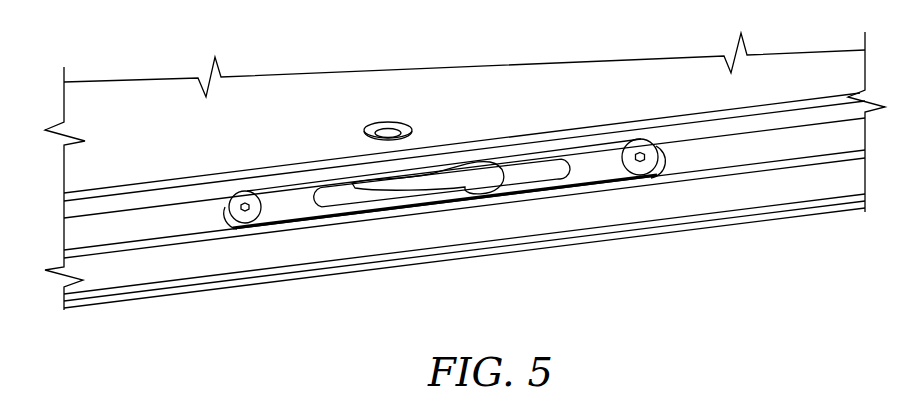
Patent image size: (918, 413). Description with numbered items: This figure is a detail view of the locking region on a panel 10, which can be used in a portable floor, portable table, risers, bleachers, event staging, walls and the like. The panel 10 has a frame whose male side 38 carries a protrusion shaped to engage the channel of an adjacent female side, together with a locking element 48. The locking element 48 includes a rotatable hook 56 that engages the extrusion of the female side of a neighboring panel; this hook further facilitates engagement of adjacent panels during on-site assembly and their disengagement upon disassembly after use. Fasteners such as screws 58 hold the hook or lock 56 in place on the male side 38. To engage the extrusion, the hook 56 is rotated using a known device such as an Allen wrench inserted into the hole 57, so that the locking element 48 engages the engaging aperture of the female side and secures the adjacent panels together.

The panel 10 is at (669, 98).
The male side 38 is at (296, 289).
The locking element 48 is at (375, 194).
The rotatable hook 56 is at (503, 175).
The hole 57 is at (415, 130).
The screws 58 is at (243, 226).